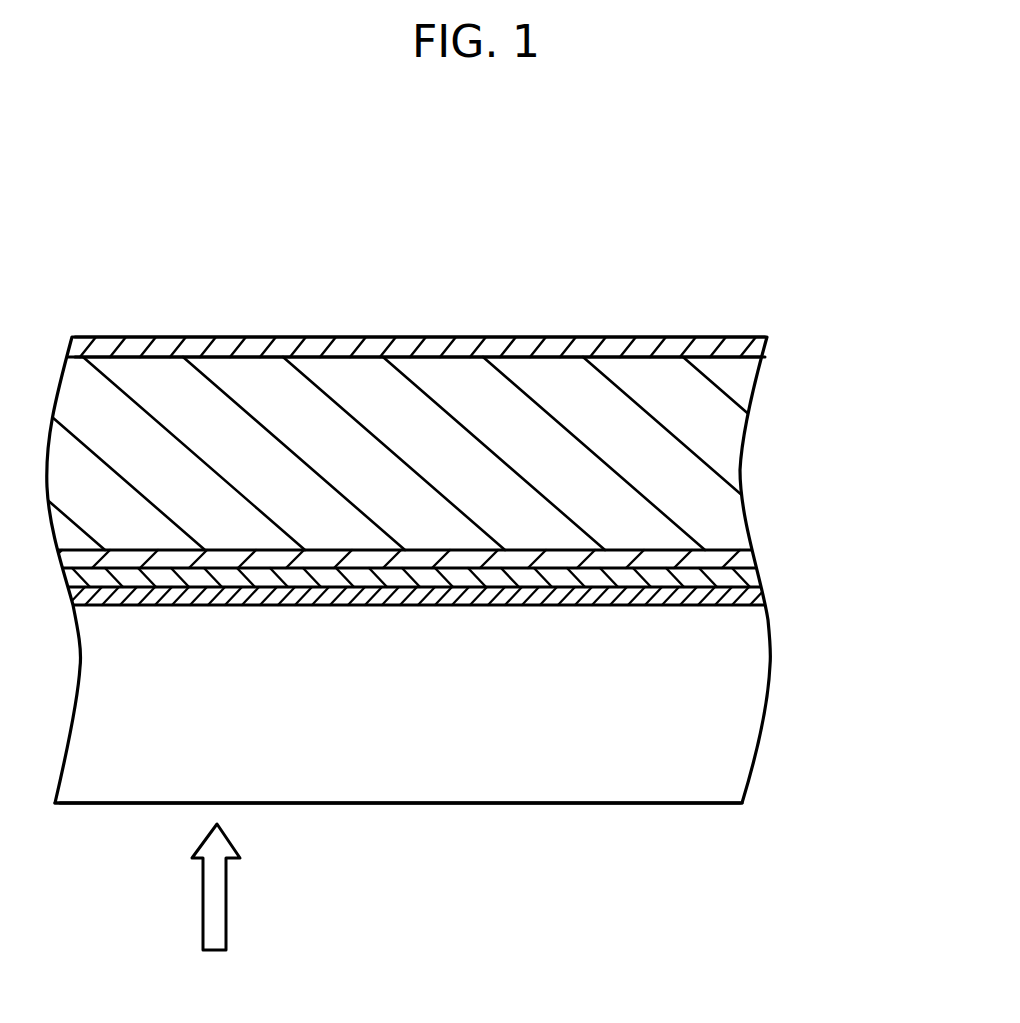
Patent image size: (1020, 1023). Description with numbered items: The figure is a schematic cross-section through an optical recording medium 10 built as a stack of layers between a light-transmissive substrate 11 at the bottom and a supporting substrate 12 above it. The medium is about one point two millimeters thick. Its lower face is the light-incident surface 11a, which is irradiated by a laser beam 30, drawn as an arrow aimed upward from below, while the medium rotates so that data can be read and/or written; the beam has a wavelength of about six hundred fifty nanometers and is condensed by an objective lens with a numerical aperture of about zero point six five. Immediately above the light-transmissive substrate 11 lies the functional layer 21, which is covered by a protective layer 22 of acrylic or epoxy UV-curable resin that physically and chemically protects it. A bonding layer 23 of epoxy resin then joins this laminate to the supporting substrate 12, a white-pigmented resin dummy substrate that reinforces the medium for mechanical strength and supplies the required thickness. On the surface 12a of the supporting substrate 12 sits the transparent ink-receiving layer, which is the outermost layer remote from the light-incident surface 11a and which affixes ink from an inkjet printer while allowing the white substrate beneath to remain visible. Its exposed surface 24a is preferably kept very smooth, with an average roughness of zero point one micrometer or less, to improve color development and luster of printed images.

The optical recording medium 10 is at (805, 221).
The light-transmissive substrate 11 is at (755, 704).
The light-incident surface 11a is at (690, 803).
The supporting substrate 12 is at (718, 459).
The surface of the supporting substrate 12a is at (160, 357).
The functional layer 21 is at (758, 600).
The protective layer 22 is at (760, 583).
The bonding layer 23 is at (760, 560).
The surface of the ink-receiving layer 24a is at (295, 337).
The laser beam 30 is at (227, 912).